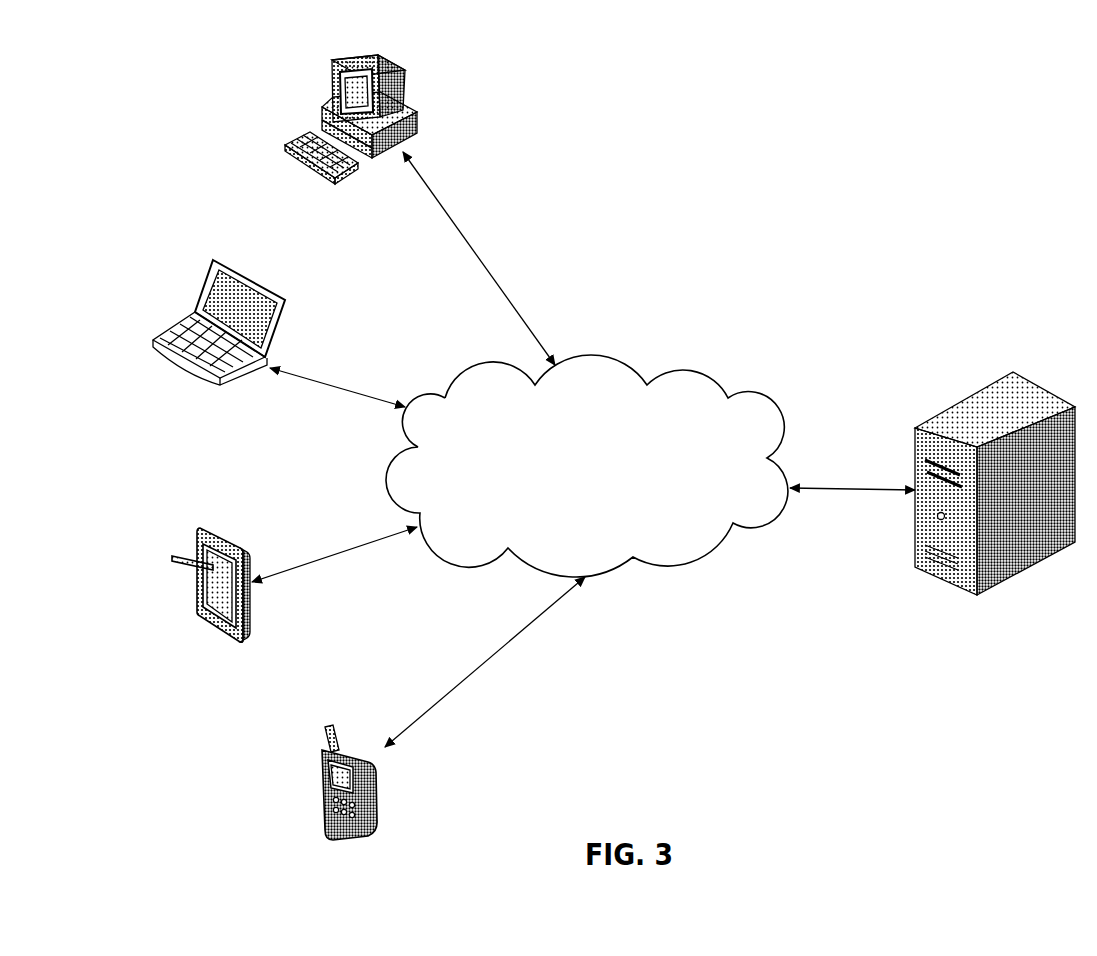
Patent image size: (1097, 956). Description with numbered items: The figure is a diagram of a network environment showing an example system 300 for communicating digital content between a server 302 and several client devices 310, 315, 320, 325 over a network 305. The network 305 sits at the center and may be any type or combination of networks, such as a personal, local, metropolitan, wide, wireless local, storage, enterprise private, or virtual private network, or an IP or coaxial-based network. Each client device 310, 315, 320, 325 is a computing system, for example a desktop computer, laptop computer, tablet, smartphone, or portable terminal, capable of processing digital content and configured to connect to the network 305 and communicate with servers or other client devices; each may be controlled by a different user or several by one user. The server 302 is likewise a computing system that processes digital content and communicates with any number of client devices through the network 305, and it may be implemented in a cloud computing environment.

The system 300 is at (912, 203).
The server 302 is at (1013, 372).
The network 305 is at (625, 360).
The client device 310 is at (403, 68).
The client device 315 is at (192, 287).
The client device 320 is at (190, 585).
The client device 325 is at (320, 787).